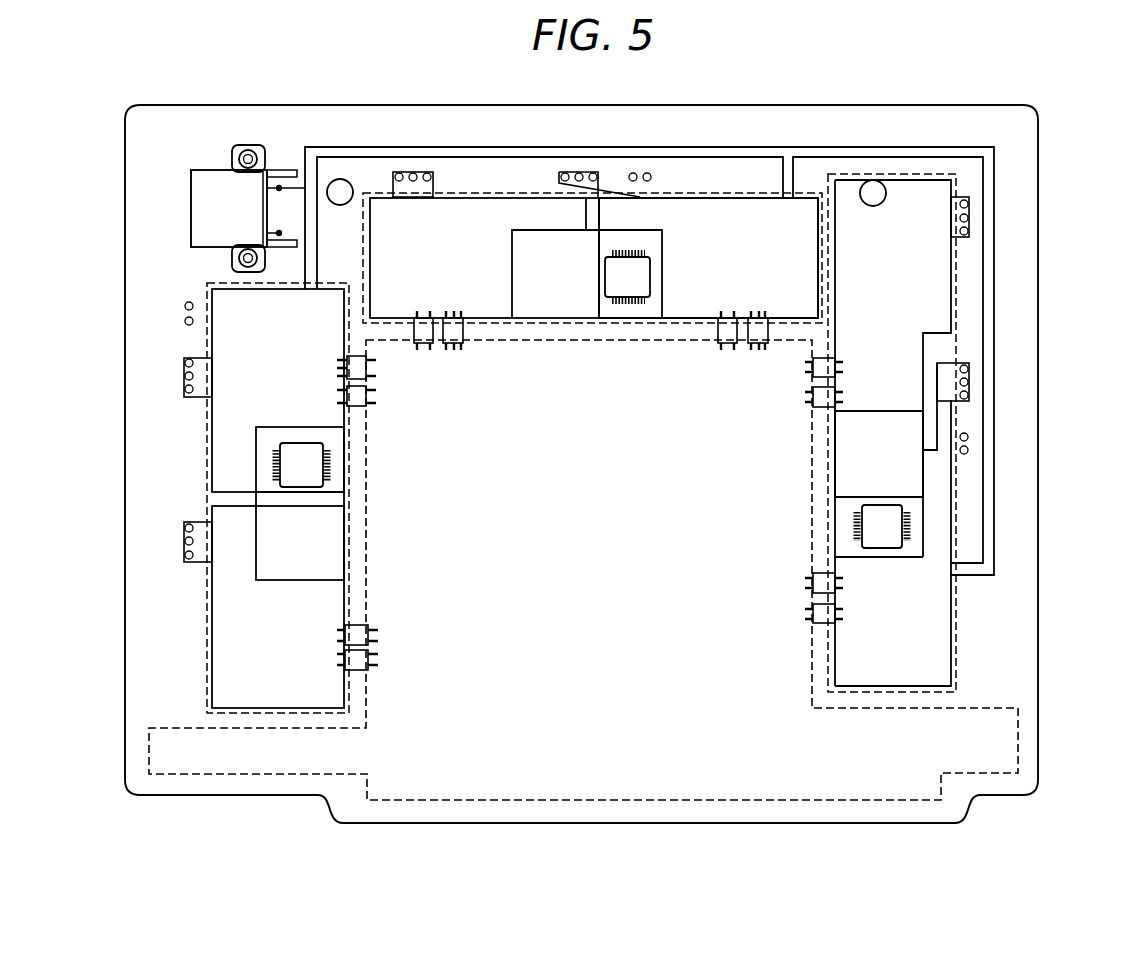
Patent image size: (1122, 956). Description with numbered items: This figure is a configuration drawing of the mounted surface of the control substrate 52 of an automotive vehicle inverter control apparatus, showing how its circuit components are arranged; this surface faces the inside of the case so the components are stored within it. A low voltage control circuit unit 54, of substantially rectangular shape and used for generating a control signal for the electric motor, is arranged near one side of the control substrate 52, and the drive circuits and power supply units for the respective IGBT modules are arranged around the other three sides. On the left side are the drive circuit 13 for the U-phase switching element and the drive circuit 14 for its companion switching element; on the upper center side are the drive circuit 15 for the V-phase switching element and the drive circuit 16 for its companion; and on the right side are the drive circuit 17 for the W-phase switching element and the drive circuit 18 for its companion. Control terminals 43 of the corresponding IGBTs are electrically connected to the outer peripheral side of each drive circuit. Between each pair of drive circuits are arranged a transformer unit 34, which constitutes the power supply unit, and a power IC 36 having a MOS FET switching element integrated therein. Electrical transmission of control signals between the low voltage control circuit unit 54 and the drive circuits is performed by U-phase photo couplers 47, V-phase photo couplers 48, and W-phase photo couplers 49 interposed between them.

The drive circuit 13 is at (215, 653).
The drive circuit 14 is at (215, 437).
The drive circuit 15 is at (483, 215).
The drive circuit 16 is at (733, 223).
The drive circuit 17 is at (928, 296).
The drive circuit 18 is at (930, 600).
The transformer unit 34 is at (330, 561).
The power IC 36 is at (315, 462).
The control terminals 43 is at (185, 390).
The U-phase photo couplers 47 is at (376, 400).
The V-phase photo couplers 48 is at (447, 352).
The W-phase photo couplers 49 is at (843, 396).
The control substrate 52 is at (1028, 538).
The low voltage control circuit unit 54 is at (772, 653).